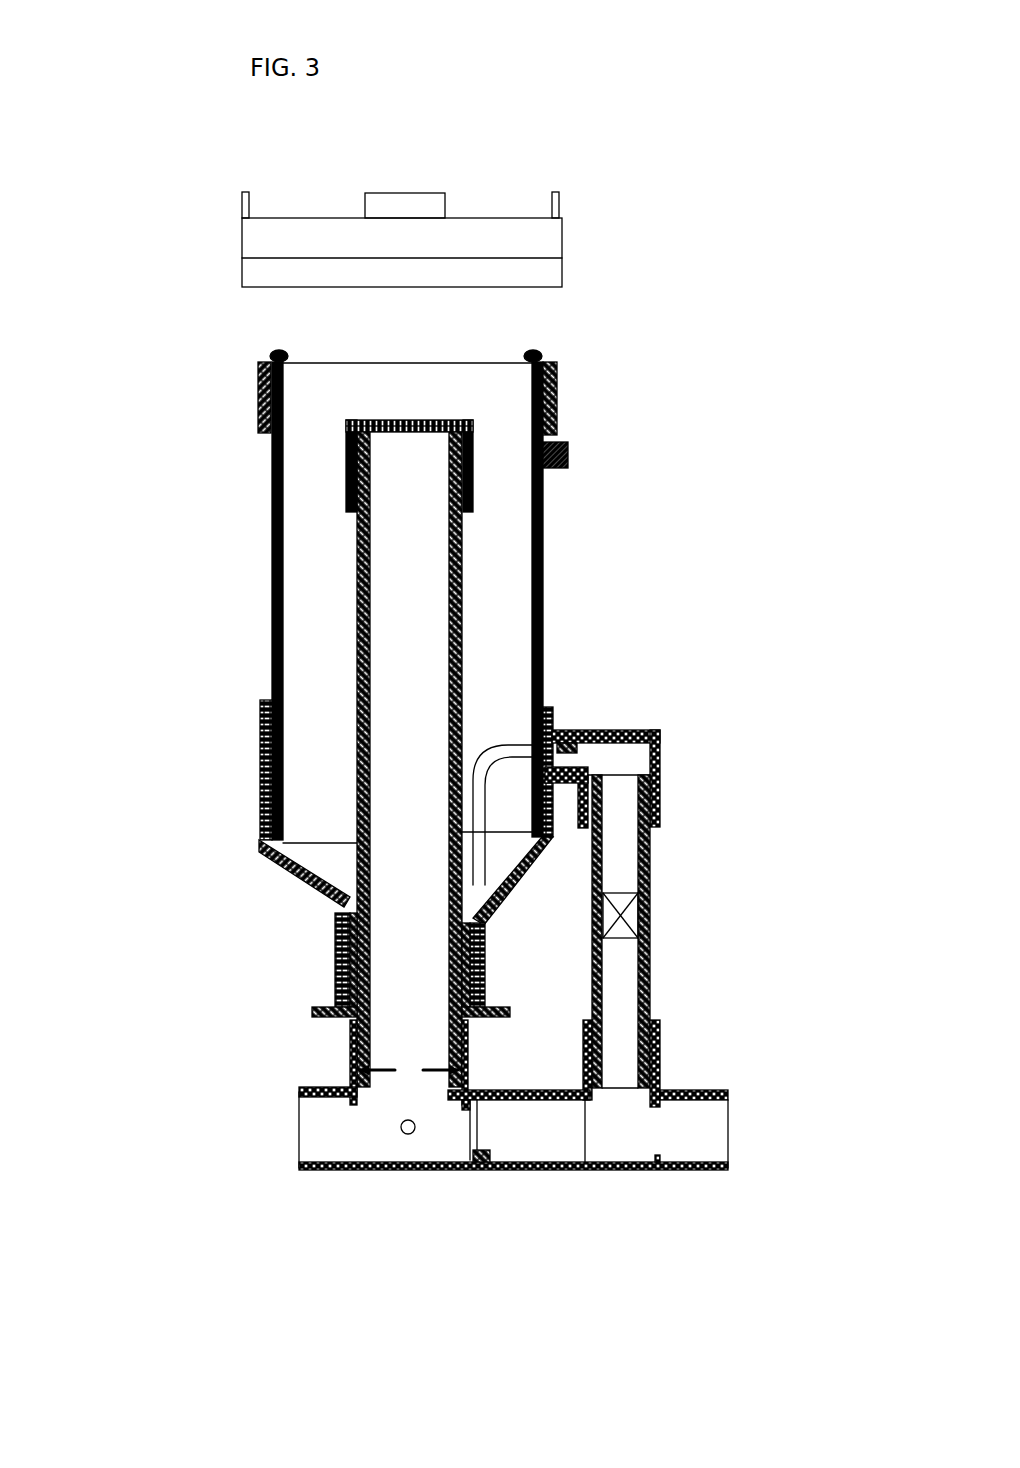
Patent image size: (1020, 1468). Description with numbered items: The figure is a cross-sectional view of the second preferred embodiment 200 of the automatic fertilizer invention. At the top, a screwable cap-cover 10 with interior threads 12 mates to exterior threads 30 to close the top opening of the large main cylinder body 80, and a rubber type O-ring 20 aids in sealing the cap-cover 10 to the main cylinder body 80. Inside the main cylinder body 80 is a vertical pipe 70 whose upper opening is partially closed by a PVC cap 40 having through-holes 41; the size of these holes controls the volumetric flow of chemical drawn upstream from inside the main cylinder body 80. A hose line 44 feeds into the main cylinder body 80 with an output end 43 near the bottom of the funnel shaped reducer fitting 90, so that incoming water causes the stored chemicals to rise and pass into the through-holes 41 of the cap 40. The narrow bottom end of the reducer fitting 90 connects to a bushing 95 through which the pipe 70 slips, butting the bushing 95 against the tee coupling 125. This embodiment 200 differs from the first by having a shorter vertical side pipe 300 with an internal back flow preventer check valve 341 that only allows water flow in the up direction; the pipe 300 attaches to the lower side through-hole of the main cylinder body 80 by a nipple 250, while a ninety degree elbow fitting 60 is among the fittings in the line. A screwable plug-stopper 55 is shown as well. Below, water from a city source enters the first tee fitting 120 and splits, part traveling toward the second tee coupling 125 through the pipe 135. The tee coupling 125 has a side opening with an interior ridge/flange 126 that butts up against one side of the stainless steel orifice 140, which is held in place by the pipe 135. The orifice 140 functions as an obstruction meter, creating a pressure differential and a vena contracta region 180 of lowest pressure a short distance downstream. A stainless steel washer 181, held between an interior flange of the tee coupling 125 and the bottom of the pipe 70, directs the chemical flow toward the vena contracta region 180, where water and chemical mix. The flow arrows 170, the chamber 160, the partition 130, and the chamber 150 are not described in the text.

The second embodiment 200 is at (137, 168).
The cap-cover 10 is at (562, 243).
The interior threads 12 is at (243, 288).
The O-ring 20 is at (543, 353).
The exterior threads 30 is at (257, 413).
The cap 40 is at (555, 417).
The through-holes 41 is at (410, 420).
The plug-stopper 55 is at (580, 447).
The pipe 70 is at (463, 565).
The main cylinder body 80 is at (545, 618).
The hose line 44 is at (522, 740).
The nipple 250 is at (580, 747).
The elbow fitting 60 is at (663, 788).
The output end 43 is at (485, 877).
The funnel shaped reducer fitting 90 is at (503, 897).
The back flow preventer check valve 341 is at (647, 908).
The vertical side pipe 300 is at (650, 953).
The bushing 95 is at (510, 1012).
The flow arrows 170 is at (408, 1053).
The tee coupling 125 is at (312, 1090).
The left chamber 160 is at (318, 1125).
The interior ridge/flange 126 is at (457, 1092).
The orifice 140 is at (488, 1165).
The partition 130 is at (517, 1157).
The pipe 135 is at (590, 1155).
The first tee fitting 120 is at (640, 1165).
The right chamber 150 is at (707, 1130).
The washer 181 is at (390, 1070).
The vena contracta region 180 is at (405, 1134).